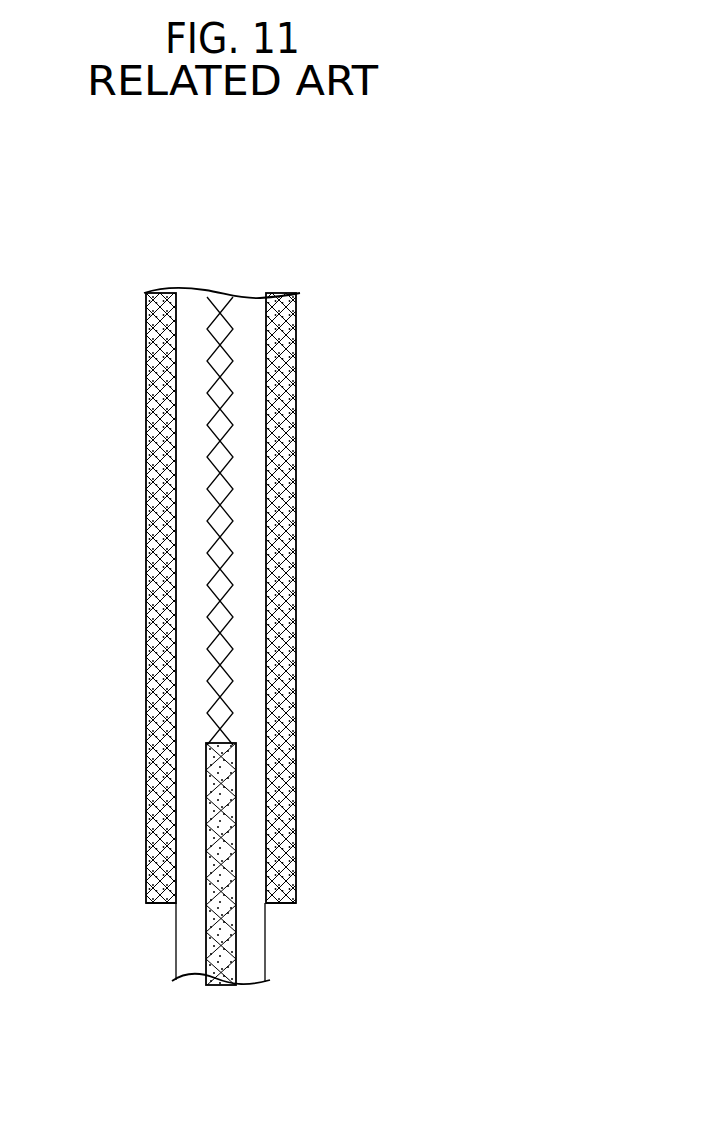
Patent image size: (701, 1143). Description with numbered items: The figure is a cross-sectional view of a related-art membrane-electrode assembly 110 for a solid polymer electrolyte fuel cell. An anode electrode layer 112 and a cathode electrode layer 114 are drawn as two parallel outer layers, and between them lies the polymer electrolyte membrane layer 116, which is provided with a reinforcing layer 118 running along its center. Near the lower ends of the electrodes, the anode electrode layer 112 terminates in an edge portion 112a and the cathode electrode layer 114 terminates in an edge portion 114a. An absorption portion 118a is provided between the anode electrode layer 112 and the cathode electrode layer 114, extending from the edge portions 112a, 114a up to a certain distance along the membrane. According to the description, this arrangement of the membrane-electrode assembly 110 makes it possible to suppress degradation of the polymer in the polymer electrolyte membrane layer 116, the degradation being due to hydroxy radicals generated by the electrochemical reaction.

The membrane-electrode assembly 110 is at (306, 238).
The anode electrode layer 112 is at (147, 479).
The edge portion 112a is at (160, 905).
The cathode electrode layer 114 is at (296, 417).
The edge portion 114a is at (282, 905).
The polymer electrolyte membrane layer 116 is at (193, 320).
The reinforcing layer 118 is at (225, 342).
The absorption portion 118a is at (220, 847).